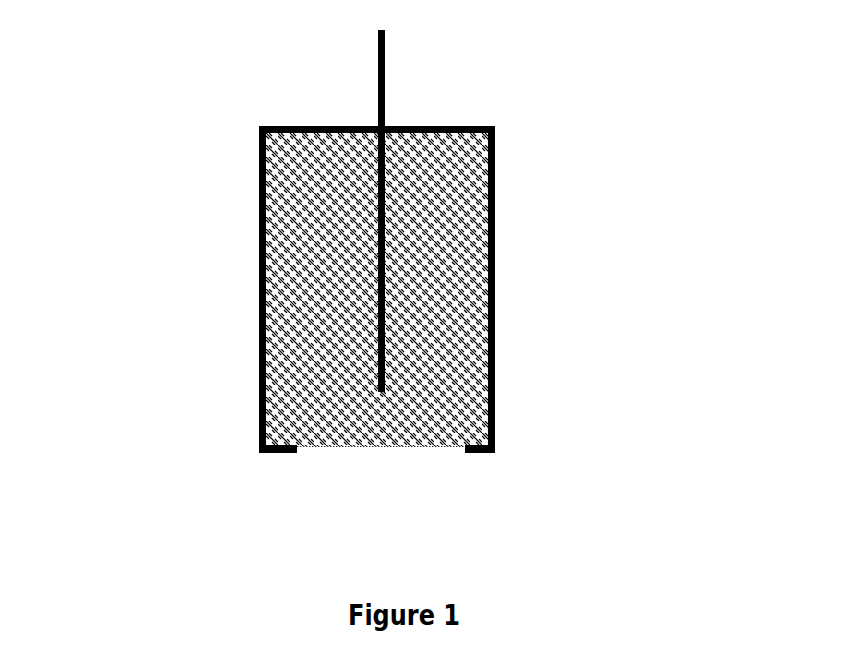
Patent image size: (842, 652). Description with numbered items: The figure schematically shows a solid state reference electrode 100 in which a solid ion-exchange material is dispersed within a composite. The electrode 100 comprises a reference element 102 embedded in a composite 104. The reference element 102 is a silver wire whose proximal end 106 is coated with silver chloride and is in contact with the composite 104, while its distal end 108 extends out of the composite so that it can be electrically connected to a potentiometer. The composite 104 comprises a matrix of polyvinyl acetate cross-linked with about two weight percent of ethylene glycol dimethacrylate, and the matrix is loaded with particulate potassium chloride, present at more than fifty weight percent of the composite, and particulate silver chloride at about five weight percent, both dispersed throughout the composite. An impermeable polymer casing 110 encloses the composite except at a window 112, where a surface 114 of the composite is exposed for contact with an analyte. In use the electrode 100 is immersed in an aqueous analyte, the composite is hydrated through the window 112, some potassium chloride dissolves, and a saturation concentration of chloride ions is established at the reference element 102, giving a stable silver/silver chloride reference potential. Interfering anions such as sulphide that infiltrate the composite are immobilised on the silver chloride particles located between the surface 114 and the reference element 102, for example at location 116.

The electrode 100 is at (191, 134).
The reference element 102 is at (387, 268).
The composite 104 is at (308, 344).
The proximal end 106 is at (387, 377).
The distal end 108 is at (387, 68).
The impermeable polymer casing 110 is at (260, 238).
The window 112 is at (312, 455).
The surface 114 is at (390, 455).
The location 116 is at (388, 430).